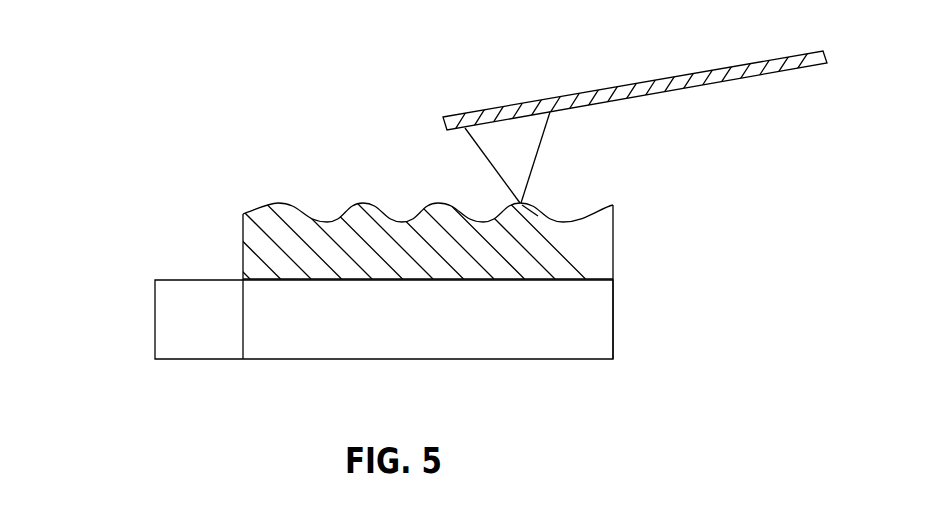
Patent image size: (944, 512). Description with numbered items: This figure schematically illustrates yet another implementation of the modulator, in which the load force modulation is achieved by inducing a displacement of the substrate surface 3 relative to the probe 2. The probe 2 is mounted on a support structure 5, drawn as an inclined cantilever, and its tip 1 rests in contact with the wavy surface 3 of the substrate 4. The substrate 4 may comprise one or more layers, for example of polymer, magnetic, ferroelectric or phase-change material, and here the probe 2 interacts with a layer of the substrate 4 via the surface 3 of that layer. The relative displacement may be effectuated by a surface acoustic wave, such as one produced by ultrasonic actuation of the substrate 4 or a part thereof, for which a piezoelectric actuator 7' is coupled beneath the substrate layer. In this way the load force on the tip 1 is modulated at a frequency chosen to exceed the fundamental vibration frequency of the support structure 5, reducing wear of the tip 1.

The tip 1 is at (542, 212).
The probe 2 is at (510, 168).
The surface 3 is at (282, 204).
The substrate 4 is at (605, 238).
The support structure 5 is at (580, 92).
The piezoelectric actuator 7' is at (342, 319).